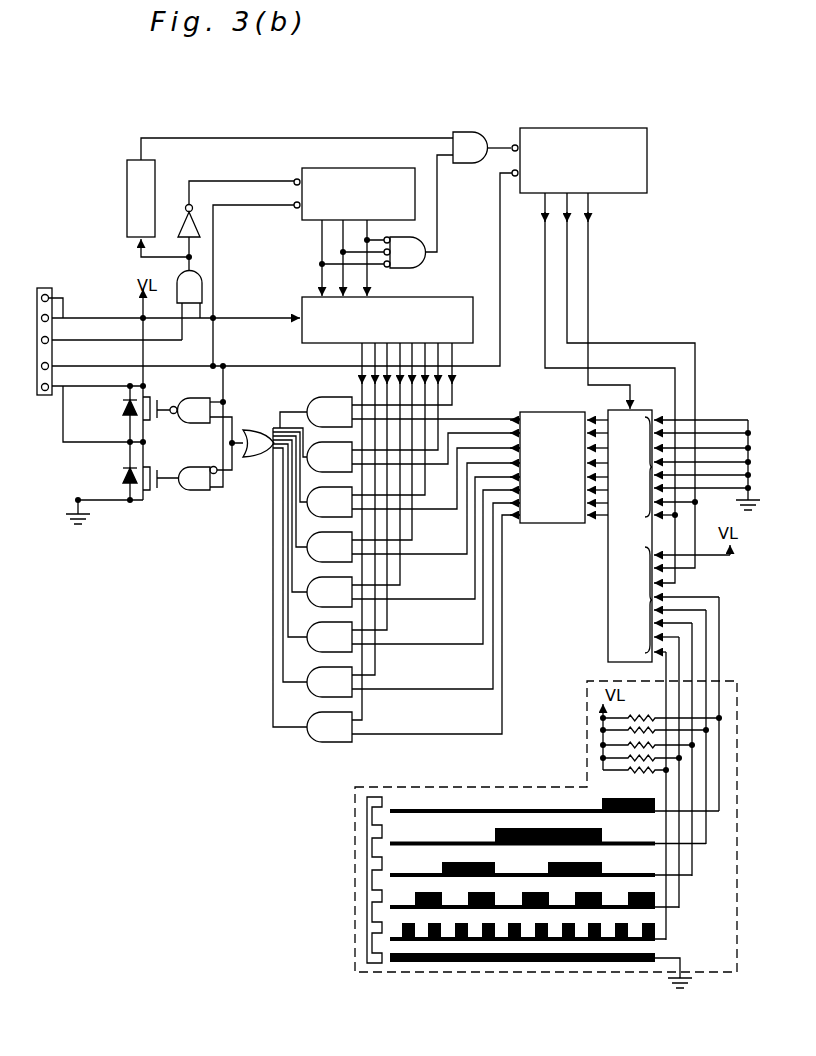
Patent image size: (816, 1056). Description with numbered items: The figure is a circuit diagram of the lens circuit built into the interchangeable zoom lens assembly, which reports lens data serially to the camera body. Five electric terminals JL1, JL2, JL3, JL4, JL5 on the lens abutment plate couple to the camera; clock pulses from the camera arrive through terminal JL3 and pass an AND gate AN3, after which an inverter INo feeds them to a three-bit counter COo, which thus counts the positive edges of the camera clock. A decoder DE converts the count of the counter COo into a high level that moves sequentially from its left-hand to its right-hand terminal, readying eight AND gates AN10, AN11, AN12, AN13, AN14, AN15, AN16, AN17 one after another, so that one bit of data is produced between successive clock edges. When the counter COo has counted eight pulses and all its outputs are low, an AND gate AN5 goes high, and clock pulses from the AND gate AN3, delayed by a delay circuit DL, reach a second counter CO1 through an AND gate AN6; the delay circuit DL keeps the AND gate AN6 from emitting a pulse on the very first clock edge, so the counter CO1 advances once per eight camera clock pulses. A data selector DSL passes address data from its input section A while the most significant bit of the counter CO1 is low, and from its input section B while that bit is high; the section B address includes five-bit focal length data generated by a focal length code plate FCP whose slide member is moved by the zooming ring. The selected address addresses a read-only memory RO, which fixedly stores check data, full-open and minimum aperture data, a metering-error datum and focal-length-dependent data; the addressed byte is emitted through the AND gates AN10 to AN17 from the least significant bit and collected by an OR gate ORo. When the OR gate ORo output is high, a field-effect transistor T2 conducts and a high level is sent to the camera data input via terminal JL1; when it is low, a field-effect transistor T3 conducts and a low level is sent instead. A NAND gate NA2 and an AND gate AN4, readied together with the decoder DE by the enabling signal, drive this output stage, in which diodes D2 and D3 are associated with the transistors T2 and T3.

The delay circuit DL is at (127, 179).
The inverter INo is at (200, 222).
The AND gate AN3 is at (203, 285).
The electric terminal JL1 is at (46, 288).
The electric terminal JL2 is at (53, 314).
The electric terminal JL3 is at (55, 338).
The electric terminal JL4 is at (55, 366).
The electric terminal JL5 is at (55, 387).
The field-effect transistor T2 is at (160, 396).
The field-effect transistor T3 is at (160, 467).
The diode D2 is at (124, 408).
The diode D3 is at (124, 475).
The NAND gate NA2 is at (200, 400).
The AND gate AN4 is at (190, 491).
The OR gate ORo is at (262, 457).
The counter COo is at (368, 168).
The AND gate AN6 is at (468, 131).
The AND gate AN5 is at (410, 245).
The decoder DE is at (455, 297).
The counter CO1 is at (615, 193).
The AND gate AN17 is at (329, 412).
The AND gate AN16 is at (329, 457).
The AND gate AN15 is at (329, 502).
The AND gate AN14 is at (329, 547).
The AND gate AN13 is at (329, 592).
The AND gate AN12 is at (329, 637).
The AND gate AN11 is at (329, 682).
The AND gate AN10 is at (329, 727).
The read-only memory RO is at (552, 523).
The data selector DSL is at (608, 628).
The focal length code plate FCP is at (585, 785).